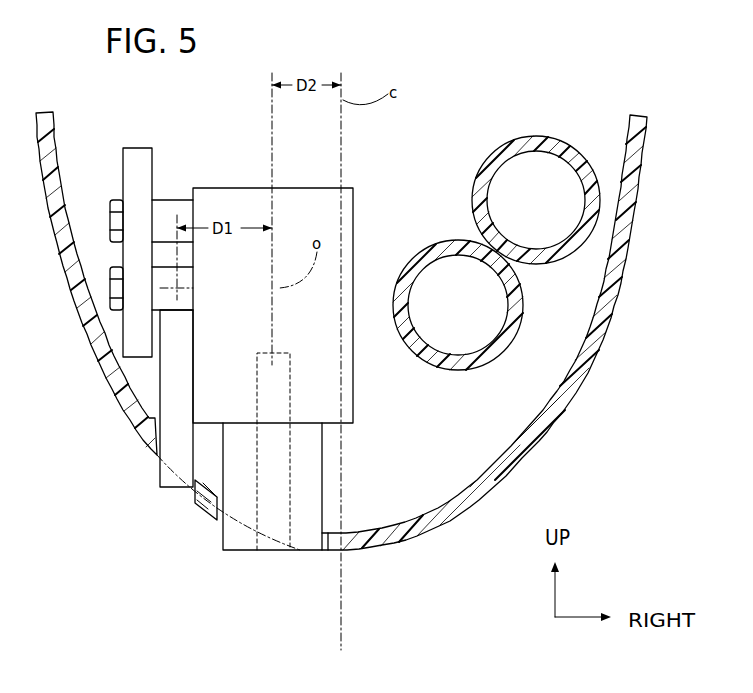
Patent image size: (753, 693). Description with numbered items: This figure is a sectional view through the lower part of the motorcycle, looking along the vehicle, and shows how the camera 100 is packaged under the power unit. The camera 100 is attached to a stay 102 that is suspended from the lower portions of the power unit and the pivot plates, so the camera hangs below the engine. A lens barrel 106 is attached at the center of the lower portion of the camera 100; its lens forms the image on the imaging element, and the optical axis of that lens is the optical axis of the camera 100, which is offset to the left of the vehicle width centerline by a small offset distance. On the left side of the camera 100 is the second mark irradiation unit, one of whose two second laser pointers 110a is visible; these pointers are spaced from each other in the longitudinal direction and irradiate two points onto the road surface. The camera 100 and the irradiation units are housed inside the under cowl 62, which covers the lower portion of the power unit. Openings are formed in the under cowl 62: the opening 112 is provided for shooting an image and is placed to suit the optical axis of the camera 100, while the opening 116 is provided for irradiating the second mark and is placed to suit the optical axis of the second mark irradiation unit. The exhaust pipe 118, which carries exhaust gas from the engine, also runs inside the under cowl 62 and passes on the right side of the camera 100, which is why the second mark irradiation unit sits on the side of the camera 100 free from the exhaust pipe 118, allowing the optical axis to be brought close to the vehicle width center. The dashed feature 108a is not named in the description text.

The under cowl 62 is at (537, 435).
The camera 100 is at (284, 197).
The stay 102 is at (142, 163).
The lens barrel 106 is at (238, 553).
The hole 108a is at (290, 380).
The second laser pointer 110a is at (160, 478).
The opening 112 is at (322, 537).
The opening 116 is at (194, 498).
The exhaust pipe 118 is at (555, 145).